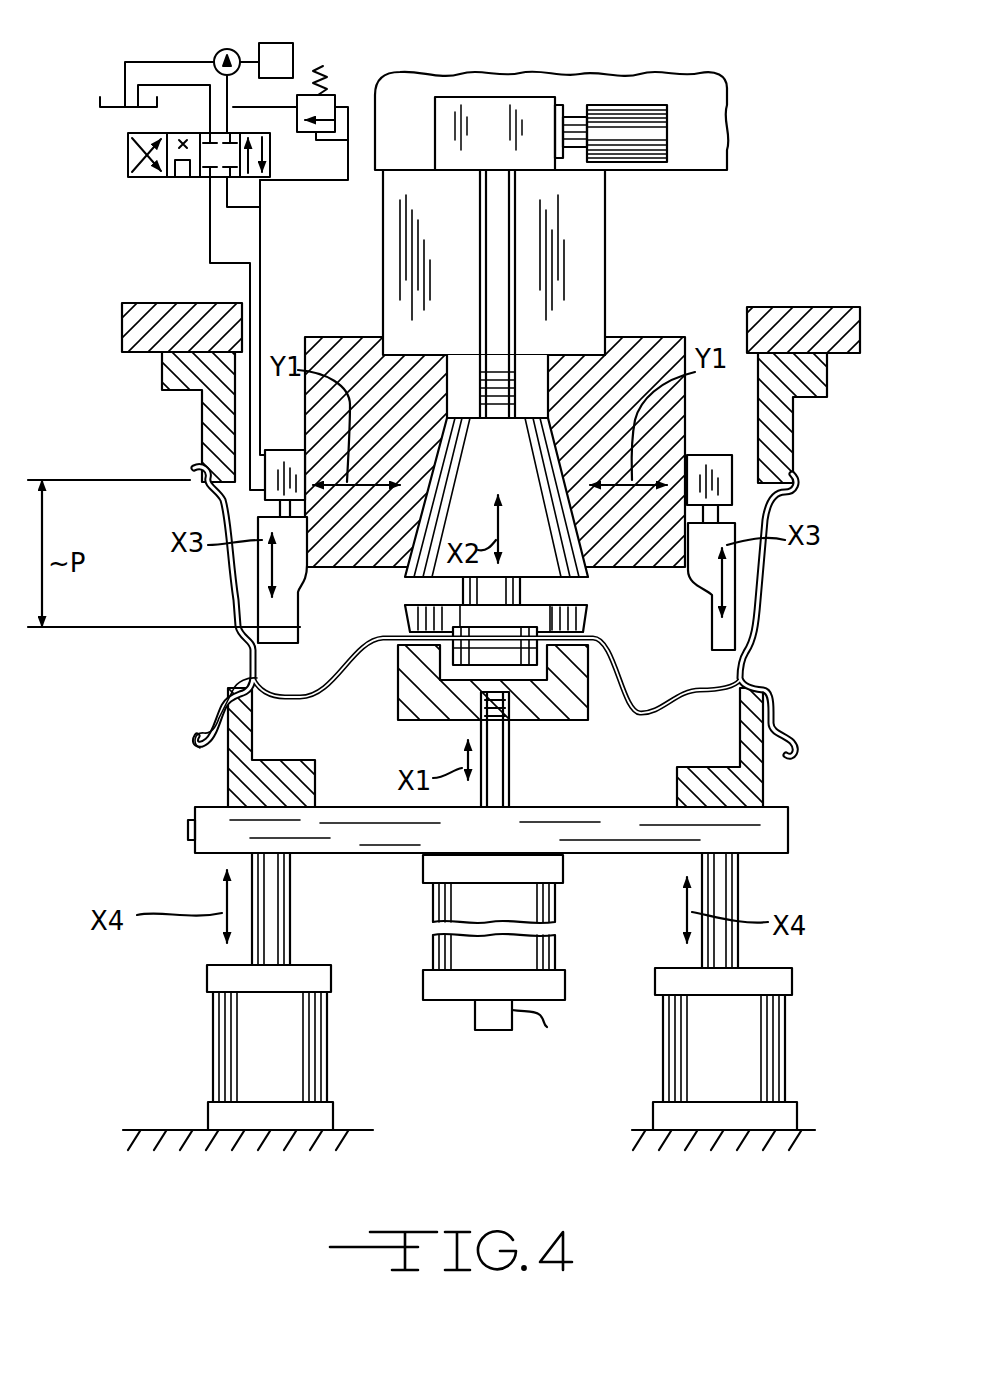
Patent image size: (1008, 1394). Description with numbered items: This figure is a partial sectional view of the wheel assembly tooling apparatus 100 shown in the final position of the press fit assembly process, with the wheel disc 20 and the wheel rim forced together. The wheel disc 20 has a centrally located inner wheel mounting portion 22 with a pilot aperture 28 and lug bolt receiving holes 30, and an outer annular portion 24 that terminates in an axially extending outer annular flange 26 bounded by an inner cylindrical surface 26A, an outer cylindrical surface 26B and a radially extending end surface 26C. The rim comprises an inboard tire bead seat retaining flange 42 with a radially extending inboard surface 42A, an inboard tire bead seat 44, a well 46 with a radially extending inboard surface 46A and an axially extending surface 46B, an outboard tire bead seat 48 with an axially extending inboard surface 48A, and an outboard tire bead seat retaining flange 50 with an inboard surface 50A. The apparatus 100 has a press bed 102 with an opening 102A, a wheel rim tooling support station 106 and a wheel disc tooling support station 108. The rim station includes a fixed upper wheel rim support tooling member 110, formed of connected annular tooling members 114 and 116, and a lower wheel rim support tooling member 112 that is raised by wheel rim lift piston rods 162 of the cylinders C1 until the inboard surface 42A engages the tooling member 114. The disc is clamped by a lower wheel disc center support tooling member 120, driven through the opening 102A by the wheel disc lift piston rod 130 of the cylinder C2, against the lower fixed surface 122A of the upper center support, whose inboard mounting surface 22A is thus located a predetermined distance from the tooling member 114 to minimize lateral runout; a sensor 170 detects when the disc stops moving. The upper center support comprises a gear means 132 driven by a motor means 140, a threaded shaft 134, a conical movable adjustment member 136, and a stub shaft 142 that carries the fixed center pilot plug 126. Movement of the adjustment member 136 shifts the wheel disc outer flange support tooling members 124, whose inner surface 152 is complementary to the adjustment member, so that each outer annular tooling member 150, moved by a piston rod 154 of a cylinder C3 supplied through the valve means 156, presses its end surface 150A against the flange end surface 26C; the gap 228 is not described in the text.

The wheel disc 20 is at (748, 662).
The inner wheel mounting portion 22 is at (590, 630).
The inboard wheel mounting surface 22A is at (575, 612).
The outer annular portion 24 is at (672, 733).
The outer annular flange 26 is at (757, 640).
The inner axially extending cylindrical surface 26A is at (278, 660).
The outer axially extending cylindrical surface 26B is at (250, 660).
The radially extending end surface 26C is at (236, 600).
The pilot aperture 28 is at (455, 607).
The lug bolt receiving holes 30 is at (410, 618).
The inboard tire bead seat retaining flange 42 is at (797, 492).
The radially extending inboard surface 42A is at (790, 462).
The inboard tire bead seat 44 is at (780, 520).
The well 46 is at (775, 555).
The radially extending inboard surface 46A is at (228, 697).
The axially extending surface 46B is at (292, 734).
The outboard tire bead seat 48 is at (775, 708).
The axially extending inboard surface 48A is at (210, 726).
The outboard tire bead seat retaining flange 50 is at (778, 728).
The inboard surface 50A is at (792, 755).
The wheel assembly tooling apparatus 100 is at (172, 468).
The press bed 102 is at (792, 830).
The opening 102A is at (485, 848).
The wheel rim tooling support station 106 is at (825, 432).
The wheel disc tooling support station 108 is at (520, 773).
The upper wheel rim support tooling member 110 is at (779, 302).
The lower wheel rim support tooling member 112 is at (322, 790).
The upper support tooling member 114 is at (205, 422).
The upper support tooling member 116 is at (185, 300).
The lower wheel disc center support tooling member 120 is at (540, 724).
The lower fixed surface 122A is at (552, 600).
The wheel disc outer flange support tooling member 124 is at (370, 337).
The fixed center pilot plug 126 is at (515, 645).
The wheel disc lift piston rod 130 is at (512, 796).
The gear means 132 is at (592, 88).
The threaded shaft 134 is at (512, 328).
The movable adjustment member 136 is at (517, 466).
The motor means 140 is at (667, 130).
The stub shaft 142 is at (673, 586).
The outer annular tooling member 150 is at (303, 518).
The end surface 150A is at (300, 608).
The inner surface 152 is at (458, 352).
The piston rod 154 is at (265, 508).
The valve means 156 is at (168, 200).
The wheel rim lift piston rods 162 is at (290, 905).
The sensor 170 is at (488, 1052).
The gap 228 is at (455, 735).
The wheel rim lift cylinders C1 is at (330, 1053).
The wheel disc lift cylinder C2 is at (560, 955).
The cylinders C3 is at (282, 450).